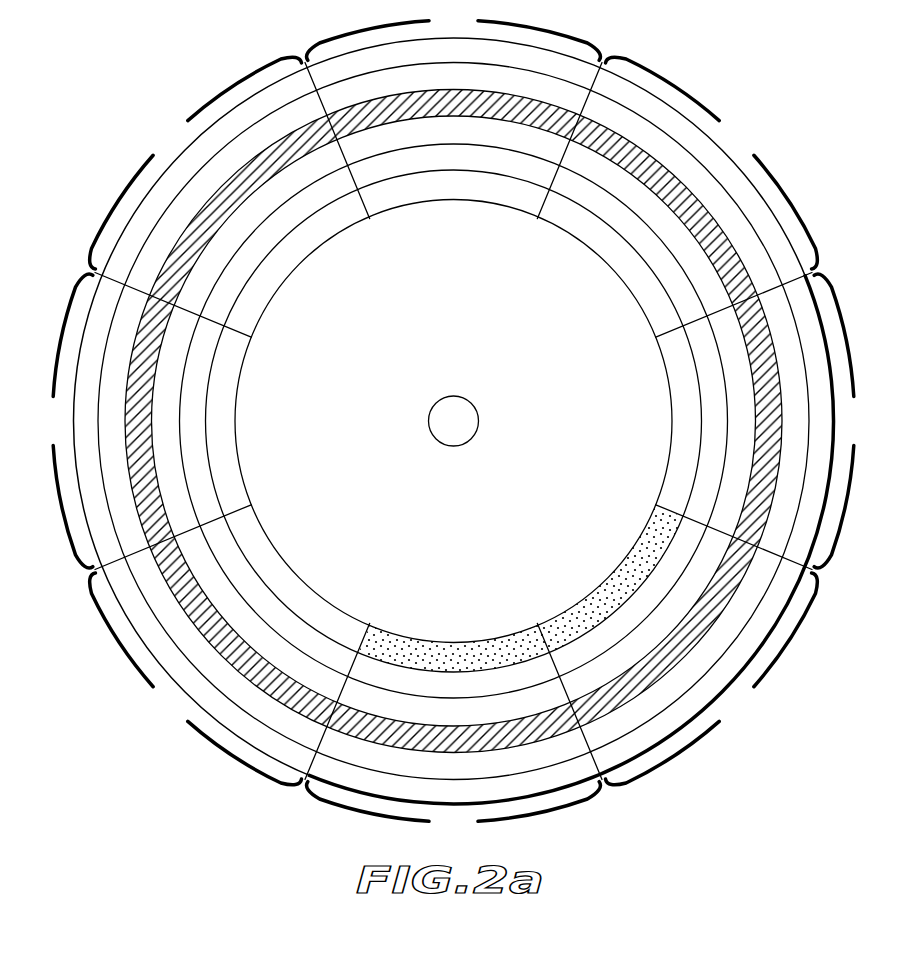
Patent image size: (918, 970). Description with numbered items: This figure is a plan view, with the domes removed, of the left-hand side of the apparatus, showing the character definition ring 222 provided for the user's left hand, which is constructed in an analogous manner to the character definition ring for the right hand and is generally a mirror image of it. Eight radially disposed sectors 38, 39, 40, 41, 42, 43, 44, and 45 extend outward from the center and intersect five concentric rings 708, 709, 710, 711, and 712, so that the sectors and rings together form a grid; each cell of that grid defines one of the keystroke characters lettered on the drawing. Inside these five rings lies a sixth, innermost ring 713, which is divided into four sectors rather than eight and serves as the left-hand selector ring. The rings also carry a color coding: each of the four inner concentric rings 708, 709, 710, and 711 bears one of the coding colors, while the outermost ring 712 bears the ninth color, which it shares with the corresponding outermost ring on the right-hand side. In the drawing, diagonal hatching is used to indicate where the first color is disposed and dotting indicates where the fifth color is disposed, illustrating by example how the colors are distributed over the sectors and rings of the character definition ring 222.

The character definition ring 222 is at (190, 88).
The radially disposed sector 38 is at (454, 113).
The radially disposed sector 39 is at (667, 208).
The radially disposed sector 40 is at (762, 421).
The radially disposed sector 41 is at (666, 634).
The radially disposed sector 42 is at (452, 735).
The radially disposed sector 43 is at (239, 633).
The radially disposed sector 44 is at (141, 420).
The radially disposed sector 45 is at (241, 207).
The concentric ring 708 is at (533, 784).
The concentric ring 709 is at (373, 760).
The concentric ring 710 is at (517, 730).
The concentric ring 711 is at (409, 713).
The concentric ring 712 is at (480, 684).
The left-hand selector ring 713 is at (668, 493).